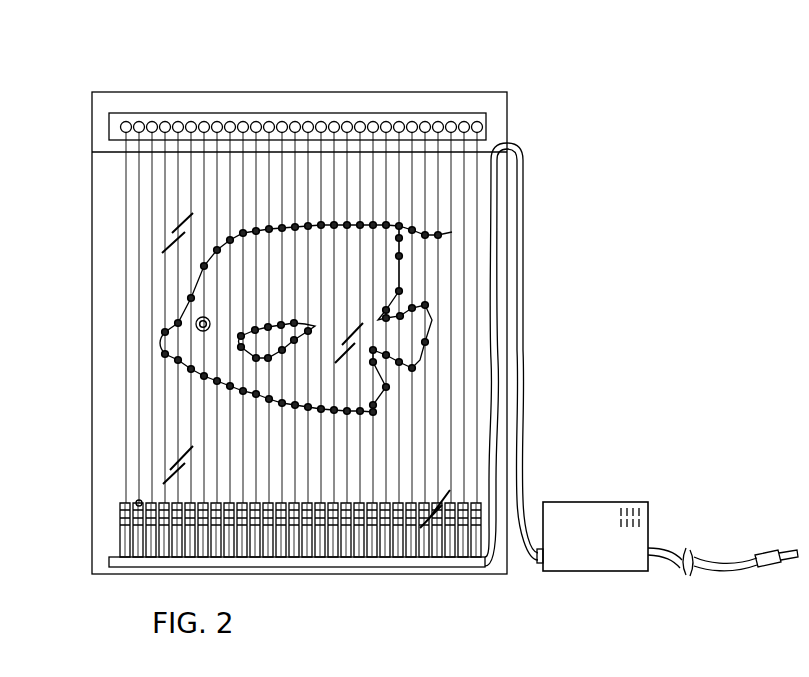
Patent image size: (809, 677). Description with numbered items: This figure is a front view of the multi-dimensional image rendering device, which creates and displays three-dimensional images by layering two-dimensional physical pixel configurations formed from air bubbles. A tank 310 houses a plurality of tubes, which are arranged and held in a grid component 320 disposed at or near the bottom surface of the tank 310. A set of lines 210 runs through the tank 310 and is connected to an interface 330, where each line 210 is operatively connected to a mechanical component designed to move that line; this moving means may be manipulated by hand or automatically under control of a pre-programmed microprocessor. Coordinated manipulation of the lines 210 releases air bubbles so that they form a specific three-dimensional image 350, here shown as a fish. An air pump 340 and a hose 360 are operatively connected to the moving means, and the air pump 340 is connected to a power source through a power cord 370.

The lines 210 is at (478, 148).
The tank 310 is at (90, 319).
The grid component 320 is at (120, 548).
The interface 330 is at (243, 100).
The air pump 340 is at (577, 500).
The three-dimensional image 350 is at (452, 232).
The hose 360 is at (537, 330).
The power cord 370 is at (727, 578).